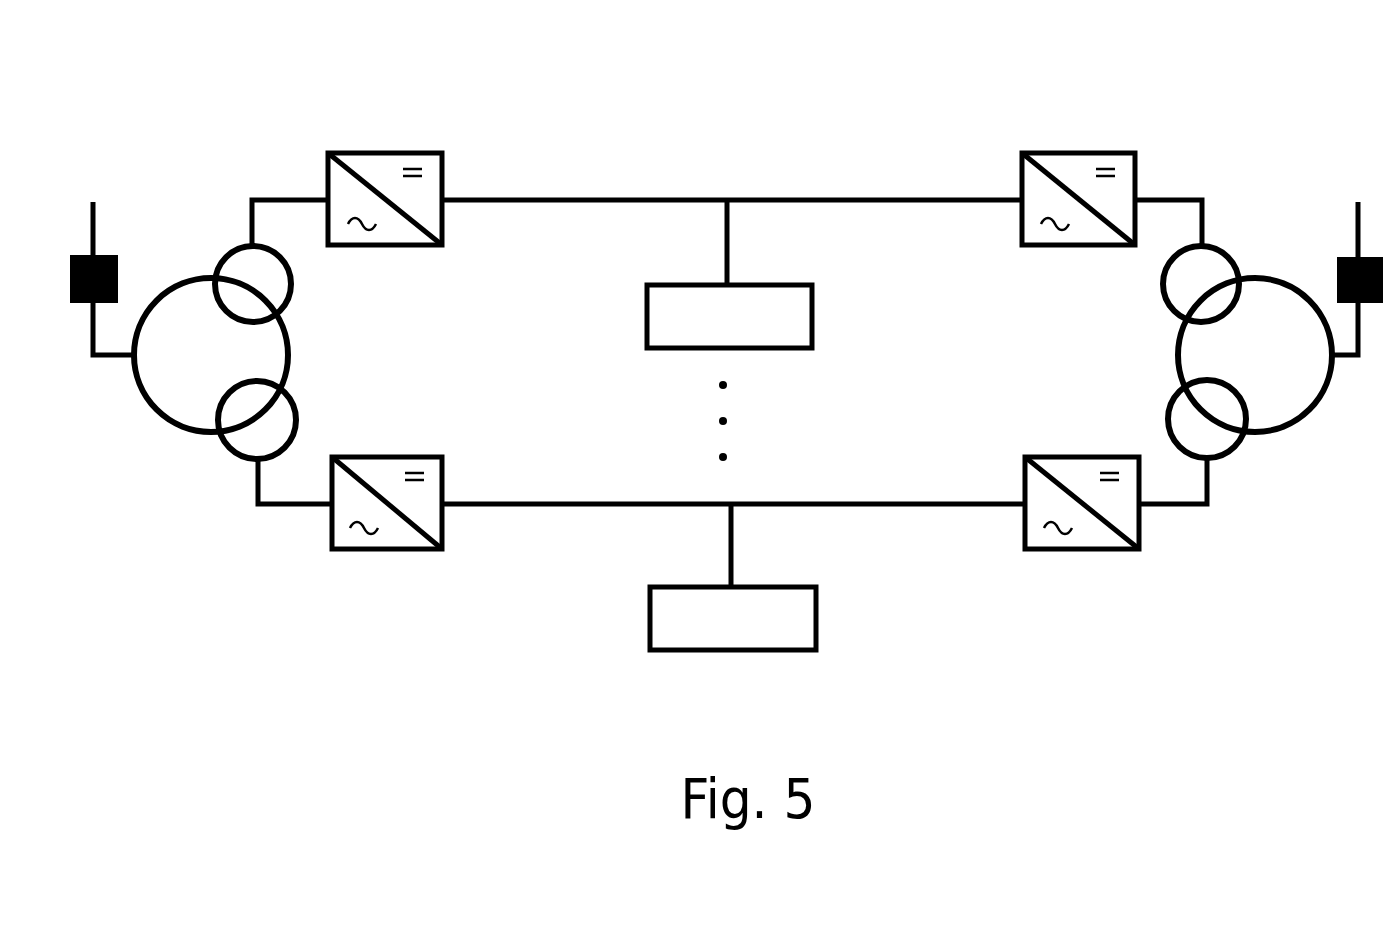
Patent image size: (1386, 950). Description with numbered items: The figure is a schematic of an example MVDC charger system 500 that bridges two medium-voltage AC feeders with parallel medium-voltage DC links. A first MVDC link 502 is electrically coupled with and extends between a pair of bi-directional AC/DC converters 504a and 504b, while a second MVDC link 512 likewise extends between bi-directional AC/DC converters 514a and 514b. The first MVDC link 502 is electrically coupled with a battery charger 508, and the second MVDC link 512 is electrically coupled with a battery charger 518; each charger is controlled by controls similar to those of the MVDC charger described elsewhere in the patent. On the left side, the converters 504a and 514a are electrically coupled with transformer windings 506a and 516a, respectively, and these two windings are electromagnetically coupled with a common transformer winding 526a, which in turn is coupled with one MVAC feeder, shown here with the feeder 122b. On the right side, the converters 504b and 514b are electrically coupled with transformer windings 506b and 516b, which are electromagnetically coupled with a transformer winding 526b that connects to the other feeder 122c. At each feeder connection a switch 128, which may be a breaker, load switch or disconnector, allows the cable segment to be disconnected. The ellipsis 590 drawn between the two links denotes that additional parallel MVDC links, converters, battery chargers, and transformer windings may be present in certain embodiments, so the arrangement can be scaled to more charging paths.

The MVDC charger system 500 is at (1283, 112).
The first MVDC link 502 is at (747, 197).
The bi-directional AC/DC converter 504a is at (380, 152).
The bi-directional AC/DC converter 504b is at (1090, 152).
The transformer winding 506a is at (293, 282).
The transformer winding 506b is at (1163, 282).
The battery charger 508 is at (812, 317).
The second MVDC link 512 is at (750, 502).
The bi-directional AC/DC converter 514a is at (388, 457).
The bi-directional AC/DC converter 514b is at (1073, 457).
The transformer winding 516a is at (298, 422).
The transformer winding 516b is at (1167, 420).
The battery charger 518 is at (816, 618).
The transformer winding 526a is at (158, 412).
The transformer winding 526b is at (1308, 412).
The ellipsis 590 is at (722, 422).
The MVAC feeder 122b is at (97, 235).
The MVAC feeder 122c is at (1357, 237).
The switch 128 is at (118, 278).